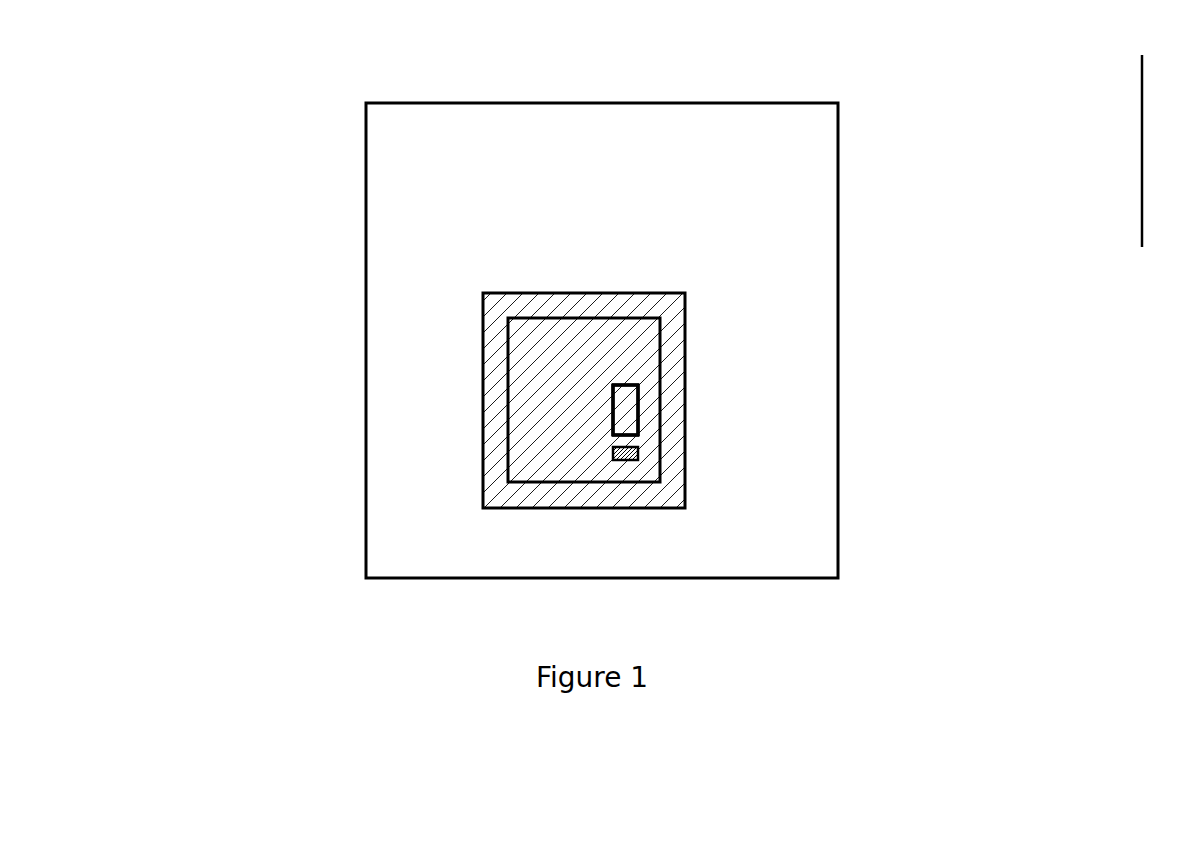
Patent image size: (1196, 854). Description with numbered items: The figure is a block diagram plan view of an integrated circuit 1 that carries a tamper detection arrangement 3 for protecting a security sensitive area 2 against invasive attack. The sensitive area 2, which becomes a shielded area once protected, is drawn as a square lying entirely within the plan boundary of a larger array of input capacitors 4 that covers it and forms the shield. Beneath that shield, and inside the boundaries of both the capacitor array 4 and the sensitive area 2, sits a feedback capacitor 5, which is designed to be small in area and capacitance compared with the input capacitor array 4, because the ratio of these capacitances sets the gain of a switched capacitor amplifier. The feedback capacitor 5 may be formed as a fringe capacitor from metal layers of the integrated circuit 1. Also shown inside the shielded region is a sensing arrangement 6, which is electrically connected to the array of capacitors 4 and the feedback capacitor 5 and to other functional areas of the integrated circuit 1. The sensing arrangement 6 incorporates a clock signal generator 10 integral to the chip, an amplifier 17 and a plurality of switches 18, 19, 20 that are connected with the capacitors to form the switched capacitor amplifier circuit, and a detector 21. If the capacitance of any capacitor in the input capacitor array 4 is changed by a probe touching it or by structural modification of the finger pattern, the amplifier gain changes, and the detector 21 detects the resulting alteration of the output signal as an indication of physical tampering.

The integrated circuit 1 is at (362, 182).
The security sensitive area 2 is at (505, 411).
The tamper detection arrangement 3 is at (1159, 151).
The array of input capacitors 4 is at (688, 290).
The feedback capacitor 5 is at (641, 446).
The sensing arrangement 6 is at (641, 385).
The amplifier 17 is at (625, 410).
The switch 18 is at (625, 410).
The switch 19 is at (625, 410).
The switch 20 is at (625, 410).
The clock signal generator 10 is at (625, 410).
The detector 21 is at (625, 410).